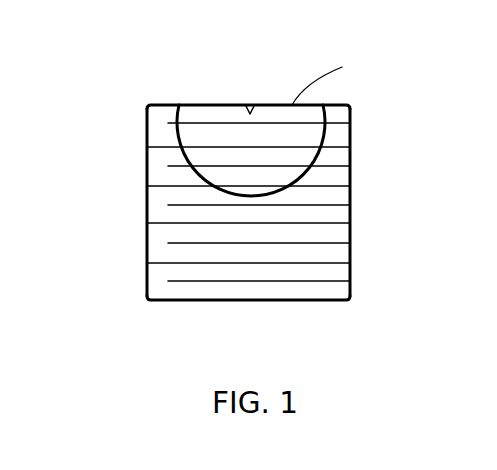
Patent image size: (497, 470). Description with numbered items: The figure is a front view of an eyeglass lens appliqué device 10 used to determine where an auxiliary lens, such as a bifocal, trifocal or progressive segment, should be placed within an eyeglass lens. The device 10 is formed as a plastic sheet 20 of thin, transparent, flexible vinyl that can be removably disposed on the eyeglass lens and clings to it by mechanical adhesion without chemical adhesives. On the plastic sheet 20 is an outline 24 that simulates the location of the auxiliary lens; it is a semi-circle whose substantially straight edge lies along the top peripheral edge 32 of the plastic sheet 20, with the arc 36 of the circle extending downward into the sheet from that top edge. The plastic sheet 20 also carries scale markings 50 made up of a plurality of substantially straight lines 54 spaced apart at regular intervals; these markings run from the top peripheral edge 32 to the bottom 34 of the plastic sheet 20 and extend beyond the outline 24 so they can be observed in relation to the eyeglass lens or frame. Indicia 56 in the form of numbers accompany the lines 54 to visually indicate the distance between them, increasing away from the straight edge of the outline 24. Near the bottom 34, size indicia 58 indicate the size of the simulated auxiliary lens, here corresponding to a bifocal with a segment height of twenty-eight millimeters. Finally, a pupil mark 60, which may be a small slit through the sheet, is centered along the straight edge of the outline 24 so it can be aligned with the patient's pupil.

The eyeglass lens appliqué device 10 is at (148, 66).
The plastic sheet 20 is at (350, 258).
The outline 24 is at (296, 171).
The top peripheral edge 32 is at (340, 112).
The bottom 34 is at (187, 302).
The arc 36 is at (303, 173).
The scale markings 50 is at (83, 95).
The substantially straight lines 54 is at (148, 186).
The indicia 56 is at (148, 122).
The size indicia 58 is at (282, 290).
The pupil mark 60 is at (249, 104).